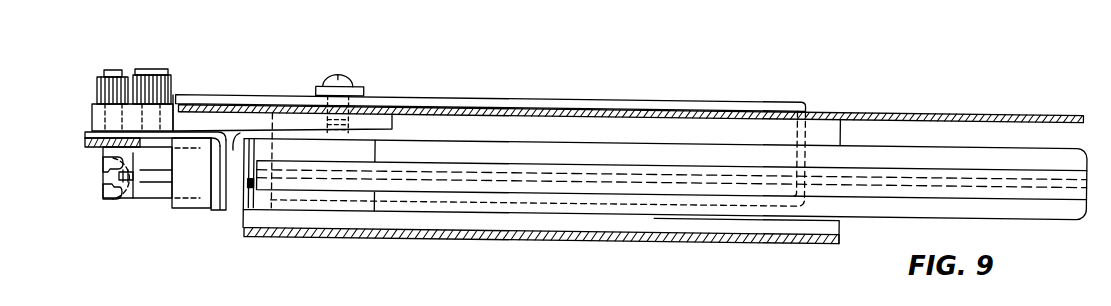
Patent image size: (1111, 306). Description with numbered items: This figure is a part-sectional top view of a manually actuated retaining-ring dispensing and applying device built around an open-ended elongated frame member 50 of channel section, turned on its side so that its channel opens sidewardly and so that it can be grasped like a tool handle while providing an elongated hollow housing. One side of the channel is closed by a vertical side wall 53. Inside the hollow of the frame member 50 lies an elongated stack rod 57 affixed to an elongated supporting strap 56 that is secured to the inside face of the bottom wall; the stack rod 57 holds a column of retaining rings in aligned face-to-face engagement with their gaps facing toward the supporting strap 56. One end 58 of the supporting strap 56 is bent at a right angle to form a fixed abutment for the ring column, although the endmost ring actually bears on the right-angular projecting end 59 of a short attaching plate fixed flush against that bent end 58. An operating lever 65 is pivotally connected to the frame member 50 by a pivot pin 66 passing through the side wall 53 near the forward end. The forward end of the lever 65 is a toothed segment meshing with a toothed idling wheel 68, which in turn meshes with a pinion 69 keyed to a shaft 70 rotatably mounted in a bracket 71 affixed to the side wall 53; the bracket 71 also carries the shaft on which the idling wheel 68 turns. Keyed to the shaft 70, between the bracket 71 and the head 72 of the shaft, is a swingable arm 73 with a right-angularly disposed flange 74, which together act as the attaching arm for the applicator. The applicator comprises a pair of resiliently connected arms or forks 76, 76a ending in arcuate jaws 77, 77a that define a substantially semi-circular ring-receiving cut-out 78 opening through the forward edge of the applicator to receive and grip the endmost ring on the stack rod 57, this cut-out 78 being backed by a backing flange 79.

The frame member 50 is at (401, 240).
The vertical side wall 53 is at (477, 108).
The supporting strap 56 is at (1062, 219).
The stack rod 57 is at (880, 190).
The end of supporting strap 58 is at (235, 141).
The projecting end of attaching plate 59 is at (251, 210).
The operating lever 65 is at (653, 101).
The pivot pin 66 is at (350, 79).
The toothed idling wheel 68 is at (157, 86).
The pinion 69 is at (97, 90).
The shaft 70 is at (108, 70).
The bracket 71 is at (297, 124).
The head of shaft 72 is at (89, 147).
The swingable arm 73 is at (85, 135).
The flange 74 is at (217, 183).
The arm or fork 76 is at (156, 157).
The arm or fork 76a is at (158, 195).
The arcuate jaw 77 is at (136, 185).
The arcuate jaw 77a is at (128, 192).
The ring-receiving cut-out 78 is at (108, 172).
The backing flange 79 is at (115, 198).